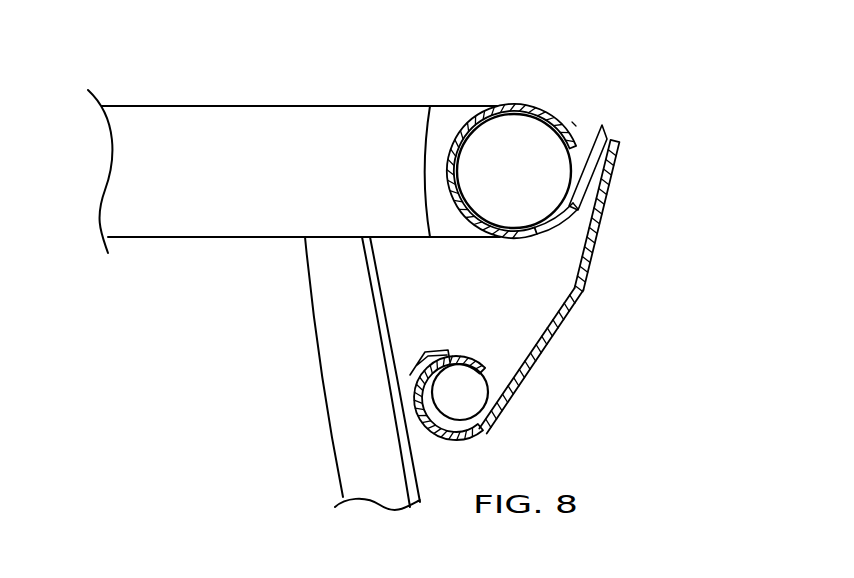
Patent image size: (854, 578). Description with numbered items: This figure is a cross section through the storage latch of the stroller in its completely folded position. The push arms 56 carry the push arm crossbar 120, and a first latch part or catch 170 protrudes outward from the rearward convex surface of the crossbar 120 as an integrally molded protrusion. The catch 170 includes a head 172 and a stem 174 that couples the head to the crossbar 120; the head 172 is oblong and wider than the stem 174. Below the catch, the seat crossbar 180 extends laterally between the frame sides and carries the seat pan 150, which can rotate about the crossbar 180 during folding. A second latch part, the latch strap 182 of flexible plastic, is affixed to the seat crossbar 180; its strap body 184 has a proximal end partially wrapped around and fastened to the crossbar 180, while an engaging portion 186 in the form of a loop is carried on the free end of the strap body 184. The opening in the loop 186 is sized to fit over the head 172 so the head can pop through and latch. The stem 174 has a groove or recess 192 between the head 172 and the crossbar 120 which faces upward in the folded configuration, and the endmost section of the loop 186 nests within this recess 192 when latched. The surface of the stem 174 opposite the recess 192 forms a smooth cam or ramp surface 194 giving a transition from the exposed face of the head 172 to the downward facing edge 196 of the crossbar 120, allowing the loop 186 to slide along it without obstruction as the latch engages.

The push arms 56 is at (133, 225).
The push arm crossbar 120 is at (466, 118).
The seat pan 150 is at (355, 380).
The catch 170 is at (578, 103).
The head 172 is at (603, 128).
The stem 174 is at (577, 165).
The seat crossbar 180 is at (458, 362).
The latch strap 182 is at (592, 295).
The strap body 184 is at (547, 355).
The engaging portion 186 is at (593, 213).
The recess 192 is at (572, 122).
The ramp surface 194 is at (575, 212).
The edge 196 is at (513, 238).